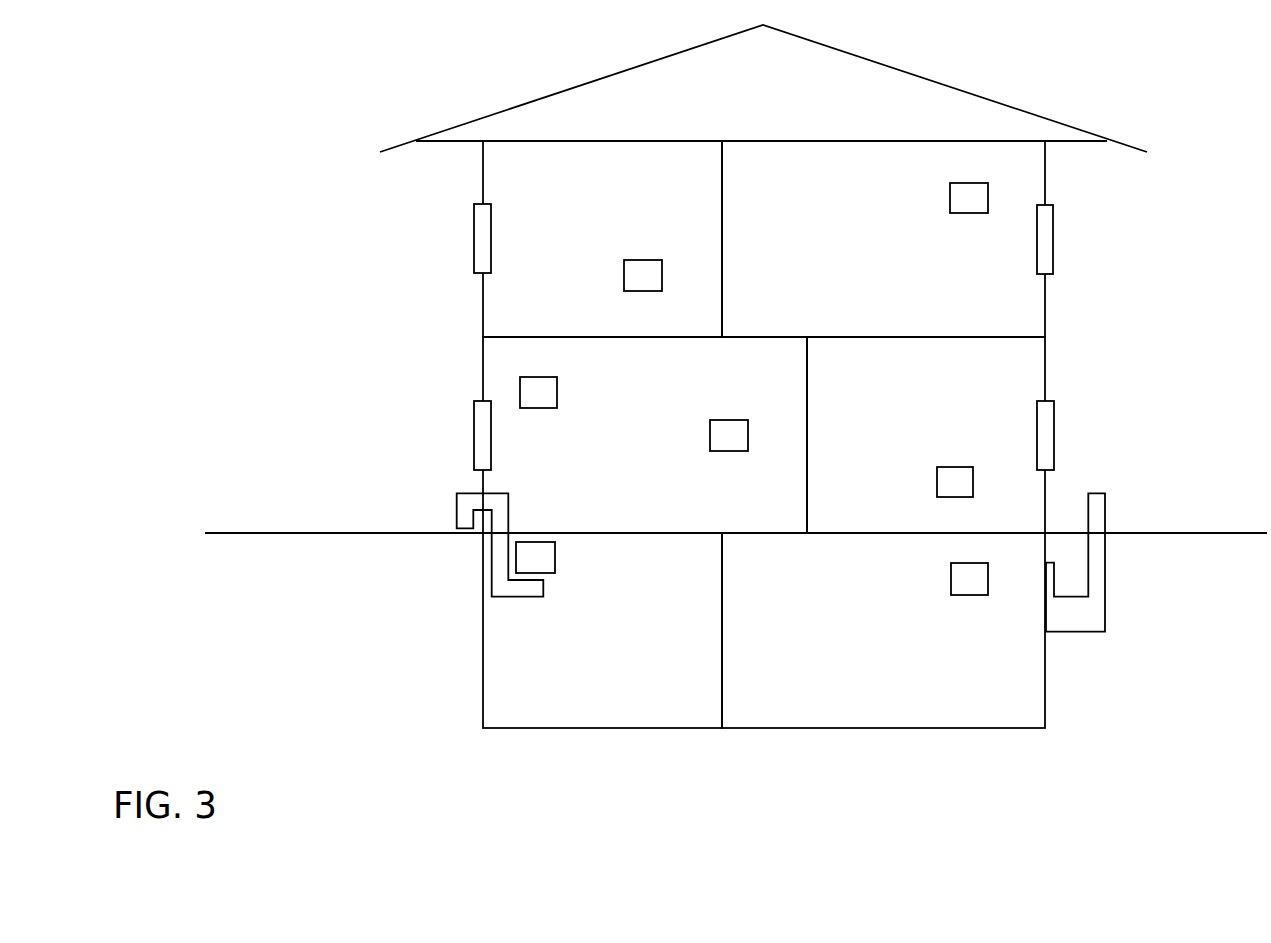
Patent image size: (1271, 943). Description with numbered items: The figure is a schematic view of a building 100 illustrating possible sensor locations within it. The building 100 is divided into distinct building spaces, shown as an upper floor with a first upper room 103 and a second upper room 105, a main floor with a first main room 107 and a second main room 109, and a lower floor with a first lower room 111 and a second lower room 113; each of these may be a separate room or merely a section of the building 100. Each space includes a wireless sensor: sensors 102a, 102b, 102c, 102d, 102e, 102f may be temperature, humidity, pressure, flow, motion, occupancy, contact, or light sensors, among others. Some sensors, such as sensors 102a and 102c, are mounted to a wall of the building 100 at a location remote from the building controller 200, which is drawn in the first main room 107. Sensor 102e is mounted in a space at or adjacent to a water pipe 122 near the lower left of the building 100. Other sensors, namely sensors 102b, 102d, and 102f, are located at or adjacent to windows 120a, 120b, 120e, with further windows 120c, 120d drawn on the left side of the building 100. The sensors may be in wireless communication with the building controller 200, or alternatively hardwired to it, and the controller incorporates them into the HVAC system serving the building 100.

The building 100 is at (955, 87).
The Upper Room 1 (UR1) 103 is at (613, 150).
The Upper Room 2 (UR2) 105 is at (768, 152).
The Main Room 1 (MR1) 107 is at (749, 345).
The Main Room 2 (MR2) 109 is at (853, 345).
The Lower Room 1 (LR1) 111 is at (685, 543).
The Lower Room 2 (LR2) 113 is at (835, 543).
The wireless sensor 102a is at (641, 265).
The wireless sensor 102b is at (967, 188).
The wireless sensor 102c is at (537, 382).
The wireless sensor 102d is at (953, 472).
The wireless sensor 102e is at (556, 557).
The wireless sensor 102f is at (967, 570).
The window 120a is at (1054, 238).
The window 120b is at (1055, 435).
The window 120c is at (473, 237).
The window 120d is at (473, 434).
The window 120e is at (1105, 527).
The water pipe 122 is at (508, 511).
The building controller 200 is at (728, 425).